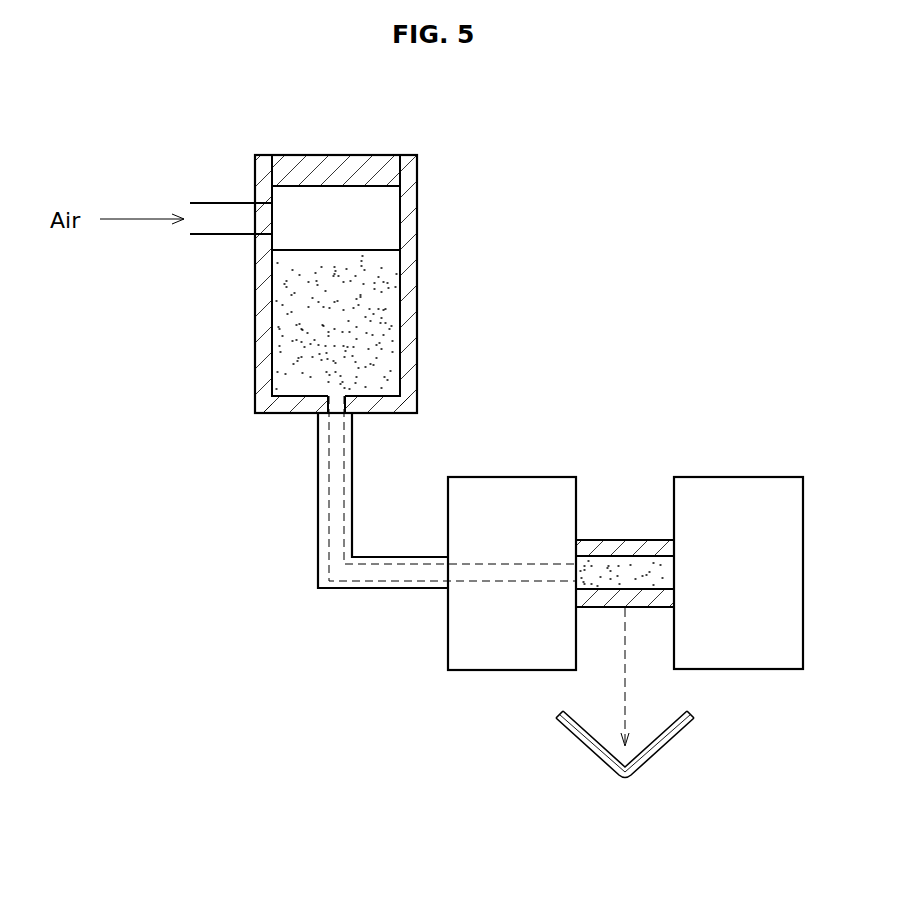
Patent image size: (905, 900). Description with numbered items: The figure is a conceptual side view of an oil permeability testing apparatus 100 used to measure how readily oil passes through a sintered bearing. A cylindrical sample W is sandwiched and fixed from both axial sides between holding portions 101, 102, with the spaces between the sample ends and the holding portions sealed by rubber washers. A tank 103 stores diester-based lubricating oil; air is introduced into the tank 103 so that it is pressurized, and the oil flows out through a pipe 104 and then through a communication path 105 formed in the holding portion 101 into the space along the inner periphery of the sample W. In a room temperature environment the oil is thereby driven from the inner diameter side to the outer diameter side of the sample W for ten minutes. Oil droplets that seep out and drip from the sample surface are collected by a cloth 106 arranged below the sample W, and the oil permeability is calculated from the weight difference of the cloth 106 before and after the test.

The oil permeability testing apparatus 100 is at (579, 285).
The holding portion 101 is at (509, 497).
The holding portion 102 is at (734, 497).
The tank 103 is at (418, 205).
The pipe 104 is at (318, 535).
The communication path 105 is at (515, 575).
The cloth 106 is at (657, 753).
The sample W is at (614, 537).